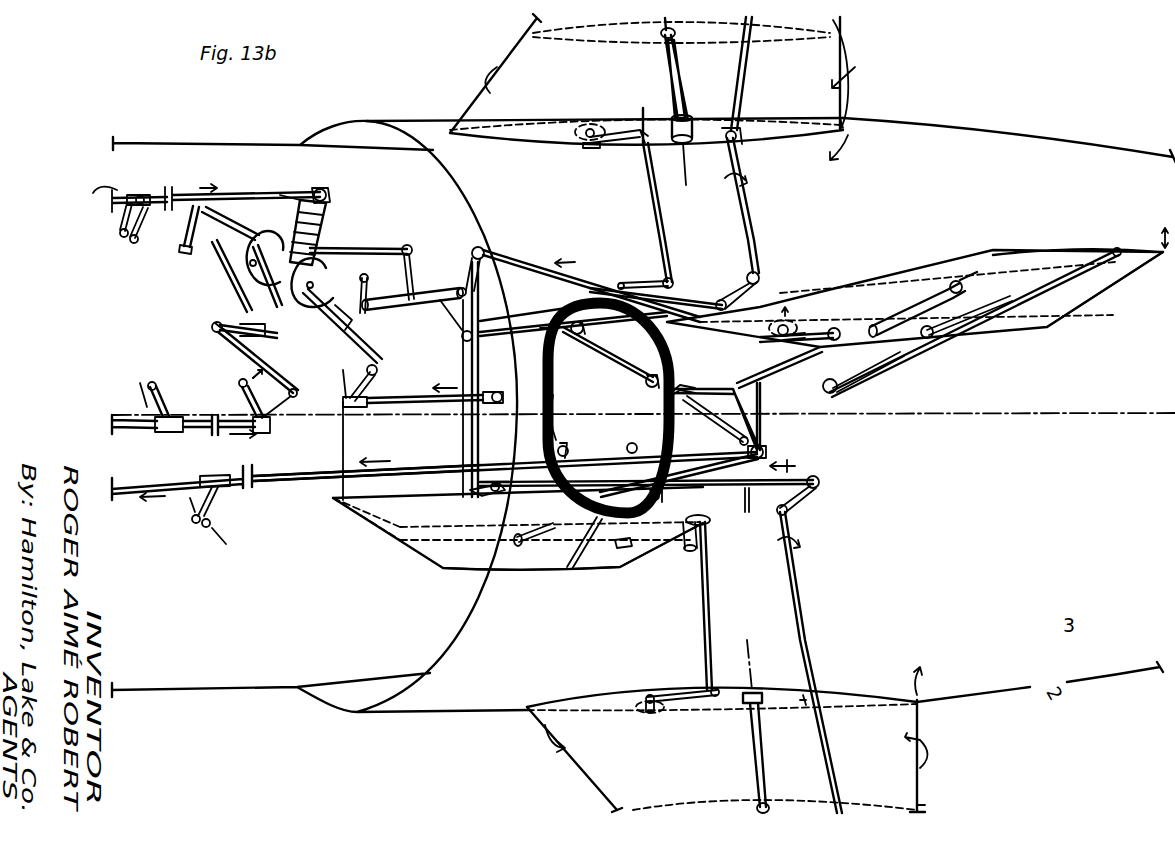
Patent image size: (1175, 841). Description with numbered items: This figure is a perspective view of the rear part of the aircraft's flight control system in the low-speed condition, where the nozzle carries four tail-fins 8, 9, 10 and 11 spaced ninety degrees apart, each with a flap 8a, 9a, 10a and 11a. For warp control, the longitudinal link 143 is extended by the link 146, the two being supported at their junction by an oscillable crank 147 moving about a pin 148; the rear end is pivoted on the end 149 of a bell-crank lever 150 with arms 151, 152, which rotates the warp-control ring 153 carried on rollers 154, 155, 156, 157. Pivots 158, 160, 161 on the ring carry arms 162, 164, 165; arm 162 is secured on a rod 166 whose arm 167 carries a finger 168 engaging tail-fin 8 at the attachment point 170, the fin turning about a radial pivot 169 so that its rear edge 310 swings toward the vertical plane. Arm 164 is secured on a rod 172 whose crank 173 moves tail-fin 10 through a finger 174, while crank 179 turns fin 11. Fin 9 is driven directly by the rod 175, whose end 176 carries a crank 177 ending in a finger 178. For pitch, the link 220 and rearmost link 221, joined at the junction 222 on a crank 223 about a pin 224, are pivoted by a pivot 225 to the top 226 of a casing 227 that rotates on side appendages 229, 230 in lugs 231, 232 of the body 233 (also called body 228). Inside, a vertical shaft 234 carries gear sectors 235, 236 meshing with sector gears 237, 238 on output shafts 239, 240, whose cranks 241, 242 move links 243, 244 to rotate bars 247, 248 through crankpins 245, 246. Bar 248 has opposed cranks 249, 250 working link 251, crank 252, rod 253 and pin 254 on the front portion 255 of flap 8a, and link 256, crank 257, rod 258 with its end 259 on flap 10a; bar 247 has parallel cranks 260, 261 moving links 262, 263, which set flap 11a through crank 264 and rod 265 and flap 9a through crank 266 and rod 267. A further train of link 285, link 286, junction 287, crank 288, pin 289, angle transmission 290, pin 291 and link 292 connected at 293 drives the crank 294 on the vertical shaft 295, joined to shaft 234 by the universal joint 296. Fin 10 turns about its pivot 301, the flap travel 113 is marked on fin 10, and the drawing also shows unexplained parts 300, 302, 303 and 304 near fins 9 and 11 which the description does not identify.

The tail-fin 8 is at (512, 58).
The control surface or flap 8a is at (840, 64).
The tail-fin 9 is at (917, 284).
The control surface or flap 9a is at (1062, 302).
The tail-fin 10 is at (726, 739).
The control surface or flap 10a is at (912, 765).
The tail-fin 11 is at (518, 532).
The control surface or flap 11a is at (692, 575).
The flap dimension 113 is at (921, 804).
The longitudinally extending link 143 is at (125, 496).
The link 146 is at (312, 480).
The oscillable crank 147 is at (214, 490).
The pin 148 is at (198, 524).
The end of bell-crank lever 149 is at (766, 452).
The bell-crank lever 150 is at (752, 392).
The arm of bell-crank lever 151 is at (773, 421).
The arm of bell-crank lever 152 is at (680, 386).
The warp-control ring 153 is at (664, 360).
The roller 154 is at (583, 332).
The roller 155 is at (650, 388).
The roller 156 is at (653, 490).
The roller 157 is at (566, 446).
The pivot 158 is at (590, 290).
The pivot 160 is at (624, 550).
The pivot 161 is at (556, 396).
The arm 162 is at (637, 280).
The arm 164 is at (682, 537).
The arm 165 is at (650, 437).
The rod 166 is at (662, 212).
The arm 167 is at (620, 146).
The finger 168 is at (584, 146).
The pivot 169 is at (670, 80).
The attachment point 170 is at (588, 127).
The rod 172 is at (706, 590).
The arm or crank 173 is at (675, 692).
The finger 174 is at (647, 714).
The rod 175 is at (757, 380).
The end of rod 176 is at (808, 352).
The crank 177 is at (820, 330).
The finger 178 is at (784, 322).
The crank 179 is at (487, 483).
The longitudinally extending link 220 is at (83, 199).
The rearmost link 221 is at (190, 196).
The junction 222 is at (138, 194).
The crank 223 is at (138, 239).
The pin 224 is at (125, 248).
The pivot 225 is at (326, 193).
The top of casing 226 is at (327, 213).
The casing 227 is at (337, 251).
The body 228 is at (330, 300).
The side appendage 229 is at (233, 195).
The side appendage 230 is at (352, 320).
The lug 231 is at (186, 253).
The lug 232 is at (382, 374).
The body 233 is at (342, 436).
The vertical shaft 234 is at (325, 232).
The gear sector 235 is at (282, 194).
The gear sector 236 is at (255, 290).
The angular sector gear 237 is at (222, 262).
The angular sector gear 238 is at (294, 388).
The output shaft 239 is at (250, 222).
The output shaft 240 is at (366, 340).
The crank 241 is at (150, 212).
The crank 242 is at (368, 410).
The link 243 is at (407, 245).
The link 244 is at (425, 406).
The crankpin 245 is at (416, 289).
The crankpin 246 is at (495, 405).
The bar 247 is at (381, 286).
The bar 248 is at (478, 350).
The crank 249 is at (462, 342).
The crank 250 is at (395, 525).
The link 251 is at (548, 325).
The crank 252 is at (747, 280).
The rod 253 is at (748, 213).
The pin 254 is at (738, 140).
The front portion of flap 255 is at (741, 95).
The link 256 is at (748, 512).
The crank 257 is at (796, 500).
The rod 258 is at (796, 580).
The foremost end of rod 259 is at (815, 738).
The crank 260 is at (455, 299).
The crank 261 is at (472, 262).
The link 262 is at (592, 360).
The link 263 is at (540, 262).
The crank 264 is at (725, 425).
The rod 265 is at (700, 467).
The crank 266 is at (848, 373).
The rod 267 is at (920, 342).
The longitudinal link 285 is at (110, 431).
The rearward longitudinally extending link 286 is at (215, 431).
The junction 287 is at (165, 433).
The crank 288 is at (148, 382).
The pin 289 is at (160, 372).
The angle transmission 290 is at (270, 424).
The pin 291 is at (244, 395).
The link 292 is at (239, 380).
The connection 293 is at (218, 334).
The crank 294 is at (215, 336).
The vertical shaft 295 is at (212, 328).
The universal joint 296 is at (210, 322).
The cylinder 300 is at (905, 318).
The pivot 301 is at (755, 757).
The rod 302 is at (530, 548).
The rod 303 is at (1006, 308).
The rod 304 is at (575, 572).
The rear edge 310 is at (843, 112).